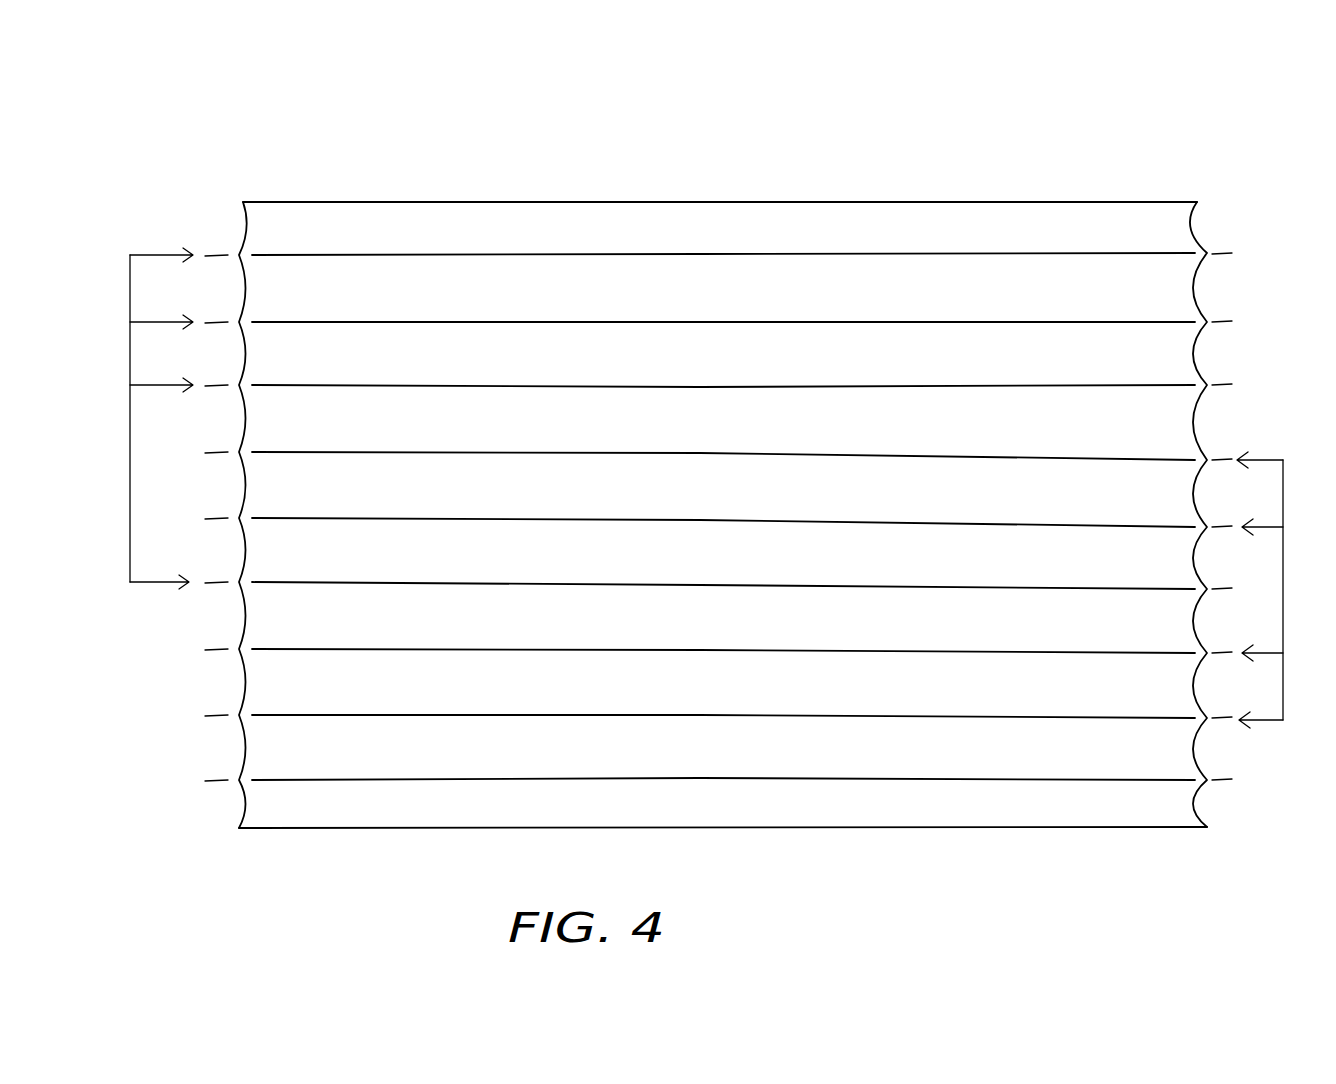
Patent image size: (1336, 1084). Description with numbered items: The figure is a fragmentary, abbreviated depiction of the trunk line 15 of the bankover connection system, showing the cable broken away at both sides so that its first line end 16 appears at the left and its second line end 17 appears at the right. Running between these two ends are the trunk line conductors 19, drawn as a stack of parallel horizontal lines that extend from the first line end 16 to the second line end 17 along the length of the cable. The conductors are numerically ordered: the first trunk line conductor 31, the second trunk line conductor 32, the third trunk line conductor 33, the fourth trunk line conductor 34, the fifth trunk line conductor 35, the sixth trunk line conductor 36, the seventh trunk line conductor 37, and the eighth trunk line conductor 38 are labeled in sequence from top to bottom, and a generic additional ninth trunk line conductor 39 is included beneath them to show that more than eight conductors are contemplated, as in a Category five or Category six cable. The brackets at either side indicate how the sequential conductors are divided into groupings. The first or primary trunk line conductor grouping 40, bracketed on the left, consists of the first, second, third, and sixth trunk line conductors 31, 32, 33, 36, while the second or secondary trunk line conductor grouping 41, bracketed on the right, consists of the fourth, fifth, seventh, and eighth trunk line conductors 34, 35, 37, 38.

The trunk line 15 is at (1048, 202).
The first line end 16 is at (243, 202).
The second line end 17 is at (1197, 202).
The trunk line conductors 19 is at (354, 236).
The first trunk line conductor 31 is at (275, 255).
The second trunk line conductor 32 is at (282, 322).
The third trunk line conductor 33 is at (290, 385).
The fourth trunk line conductor 34 is at (280, 452).
The fifth trunk line conductor 35 is at (280, 518).
The sixth trunk line conductor 36 is at (278, 582).
The seventh trunk line conductor 37 is at (287, 649).
The eighth trunk line conductor 38 is at (288, 715).
The ninth trunk line conductor 39 is at (285, 780).
The first trunk line conductor grouping 40 is at (130, 425).
The second trunk line conductor grouping 41 is at (1283, 593).